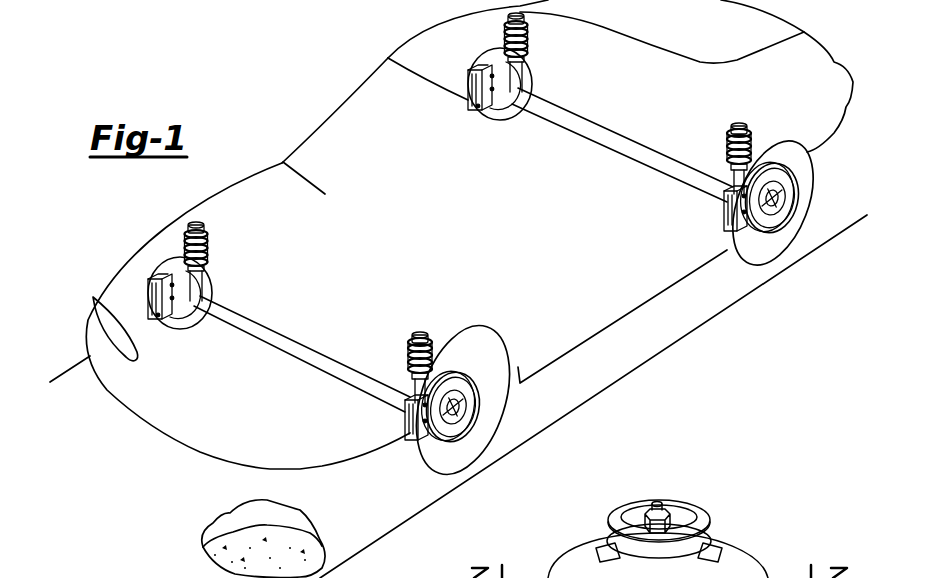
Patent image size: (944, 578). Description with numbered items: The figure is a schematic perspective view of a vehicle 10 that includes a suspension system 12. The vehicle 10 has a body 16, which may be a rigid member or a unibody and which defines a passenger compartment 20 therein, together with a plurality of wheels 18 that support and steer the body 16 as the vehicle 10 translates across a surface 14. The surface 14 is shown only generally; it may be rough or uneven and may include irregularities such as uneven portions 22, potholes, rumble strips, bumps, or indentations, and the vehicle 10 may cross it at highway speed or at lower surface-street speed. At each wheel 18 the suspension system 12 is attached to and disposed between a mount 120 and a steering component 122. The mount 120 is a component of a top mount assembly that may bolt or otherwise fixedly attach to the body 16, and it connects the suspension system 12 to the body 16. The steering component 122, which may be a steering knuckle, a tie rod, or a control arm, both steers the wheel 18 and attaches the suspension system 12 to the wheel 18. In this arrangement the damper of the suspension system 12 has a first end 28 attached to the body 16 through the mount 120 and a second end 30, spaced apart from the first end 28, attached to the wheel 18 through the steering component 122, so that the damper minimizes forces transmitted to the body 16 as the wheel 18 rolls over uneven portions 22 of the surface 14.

The vehicle 10 is at (281, 60).
The suspension system 12 is at (400, 446).
The surface 14 is at (128, 455).
The body 16 is at (558, 332).
The wheel 18 is at (470, 443).
The passenger compartment 20 is at (336, 129).
The uneven portions 22 is at (225, 518).
The first end 28 is at (543, 42).
The second end 30 is at (540, 83).
The mount 120 is at (203, 233).
The steering component 122 is at (169, 269).